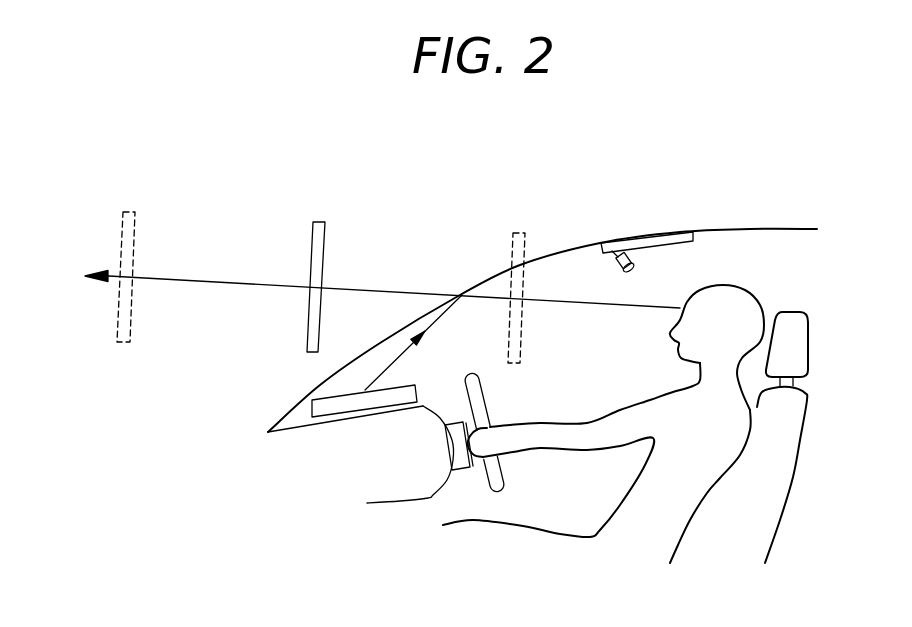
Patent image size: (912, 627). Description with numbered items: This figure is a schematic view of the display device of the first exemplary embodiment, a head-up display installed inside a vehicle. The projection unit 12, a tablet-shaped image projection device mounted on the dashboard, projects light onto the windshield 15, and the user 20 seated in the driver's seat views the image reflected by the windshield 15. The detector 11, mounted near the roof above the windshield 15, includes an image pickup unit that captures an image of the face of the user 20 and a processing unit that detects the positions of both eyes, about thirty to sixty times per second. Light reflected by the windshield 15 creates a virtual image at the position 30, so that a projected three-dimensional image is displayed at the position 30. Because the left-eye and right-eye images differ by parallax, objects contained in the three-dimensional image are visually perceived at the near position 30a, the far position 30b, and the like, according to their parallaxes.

The detector 11 is at (617, 254).
The projection unit 12 is at (323, 409).
The windshield 15 is at (488, 284).
The user 20 is at (741, 300).
The position 30 is at (318, 225).
The near position 30a is at (520, 234).
The far position 30b is at (130, 213).